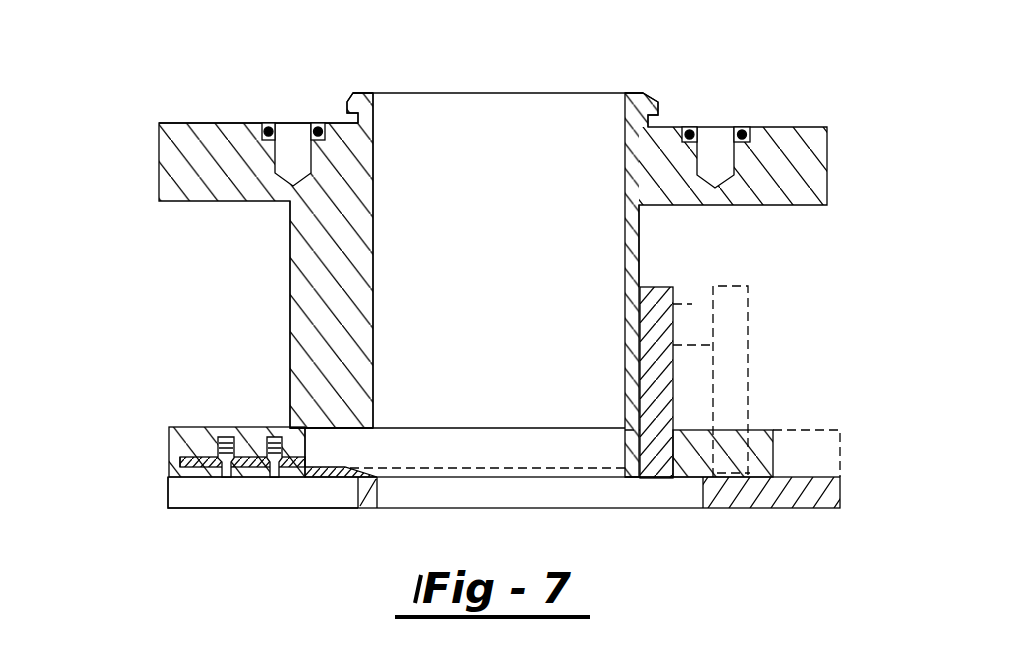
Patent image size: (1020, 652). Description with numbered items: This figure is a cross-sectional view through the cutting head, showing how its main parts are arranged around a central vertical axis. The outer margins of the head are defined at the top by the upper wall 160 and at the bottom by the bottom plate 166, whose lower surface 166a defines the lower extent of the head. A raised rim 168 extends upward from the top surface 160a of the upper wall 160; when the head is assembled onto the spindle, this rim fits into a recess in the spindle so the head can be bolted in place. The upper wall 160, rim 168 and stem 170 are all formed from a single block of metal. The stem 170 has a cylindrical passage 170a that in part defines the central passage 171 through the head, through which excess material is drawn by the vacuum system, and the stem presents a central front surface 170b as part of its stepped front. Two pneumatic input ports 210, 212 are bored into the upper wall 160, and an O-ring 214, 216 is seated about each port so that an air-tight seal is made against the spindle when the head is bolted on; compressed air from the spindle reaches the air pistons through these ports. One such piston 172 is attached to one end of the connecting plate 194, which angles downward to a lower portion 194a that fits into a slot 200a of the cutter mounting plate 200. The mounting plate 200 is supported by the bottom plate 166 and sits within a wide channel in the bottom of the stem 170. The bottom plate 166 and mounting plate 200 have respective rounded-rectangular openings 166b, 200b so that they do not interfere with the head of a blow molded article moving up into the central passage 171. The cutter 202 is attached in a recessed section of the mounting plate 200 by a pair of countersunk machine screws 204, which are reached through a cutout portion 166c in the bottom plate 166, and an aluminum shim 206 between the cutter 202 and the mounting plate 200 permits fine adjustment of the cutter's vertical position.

The upper wall 160 is at (159, 160).
The top surface 160a is at (202, 123).
The raised rim 168 is at (660, 100).
The stem 170 is at (360, 252).
The cylindrical passage 170a is at (375, 188).
The central front surface 170b is at (643, 235).
The central passage 171 is at (522, 285).
The piston 172 is at (692, 304).
The connecting plate 194 is at (652, 338).
The lower portion 194a is at (668, 477).
The cutter mounting plate 200 is at (197, 427).
The slot 200a is at (650, 474).
The rounded-rectangular opening 200b is at (483, 444).
The cutter 202 is at (345, 480).
The countersunk machine screws 204 is at (273, 470).
The aluminum shim 206 is at (206, 455).
The pneumatic input port 210 is at (297, 123).
The pneumatic input port 212 is at (718, 127).
The O-ring 214 is at (270, 123).
The O-ring 216 is at (742, 127).
The bottom plate 166 is at (787, 500).
The lower surface 166a is at (820, 520).
The rounded-rectangular opening 166b is at (378, 480).
The cutout portion 166c is at (185, 497).